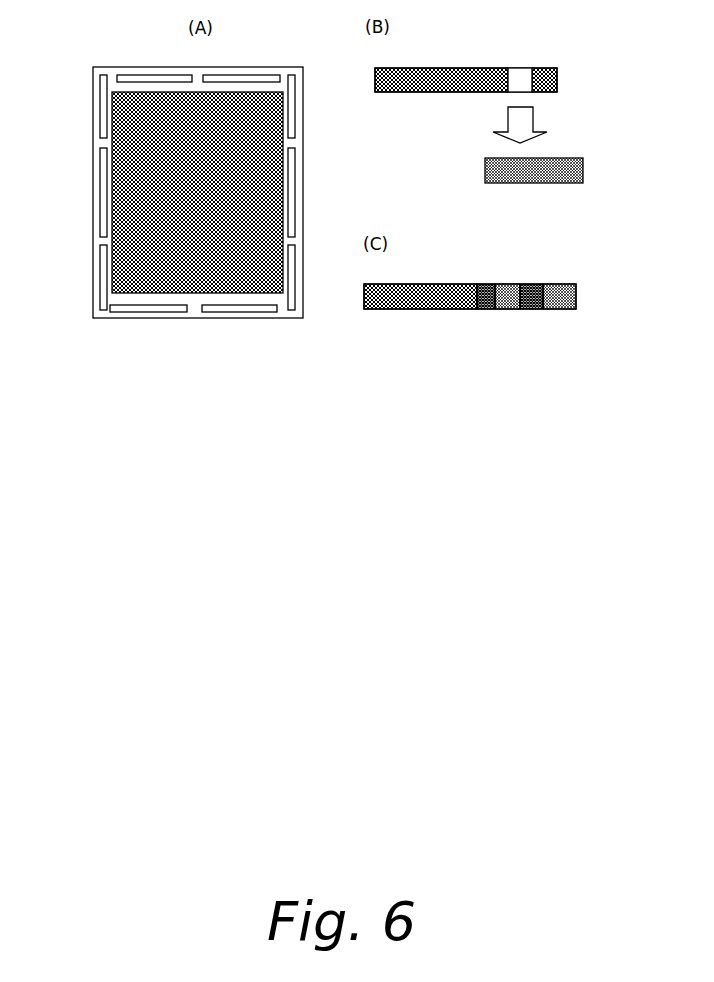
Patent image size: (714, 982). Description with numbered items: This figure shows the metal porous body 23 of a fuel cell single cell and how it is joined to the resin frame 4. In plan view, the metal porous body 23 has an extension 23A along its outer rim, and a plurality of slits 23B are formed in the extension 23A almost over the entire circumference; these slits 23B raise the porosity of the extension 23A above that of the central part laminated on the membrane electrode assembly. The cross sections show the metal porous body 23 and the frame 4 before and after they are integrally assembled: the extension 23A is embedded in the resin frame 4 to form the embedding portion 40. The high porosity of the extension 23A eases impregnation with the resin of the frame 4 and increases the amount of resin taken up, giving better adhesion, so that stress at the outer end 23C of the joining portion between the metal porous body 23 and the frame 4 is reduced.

The metal porous body 23 is at (258, 92).
The extension 23A is at (200, 68).
The slits 23B is at (115, 78).
The outer end 23C is at (558, 78).
The frame 4 is at (550, 172).
The embedding portion 40 is at (455, 308).